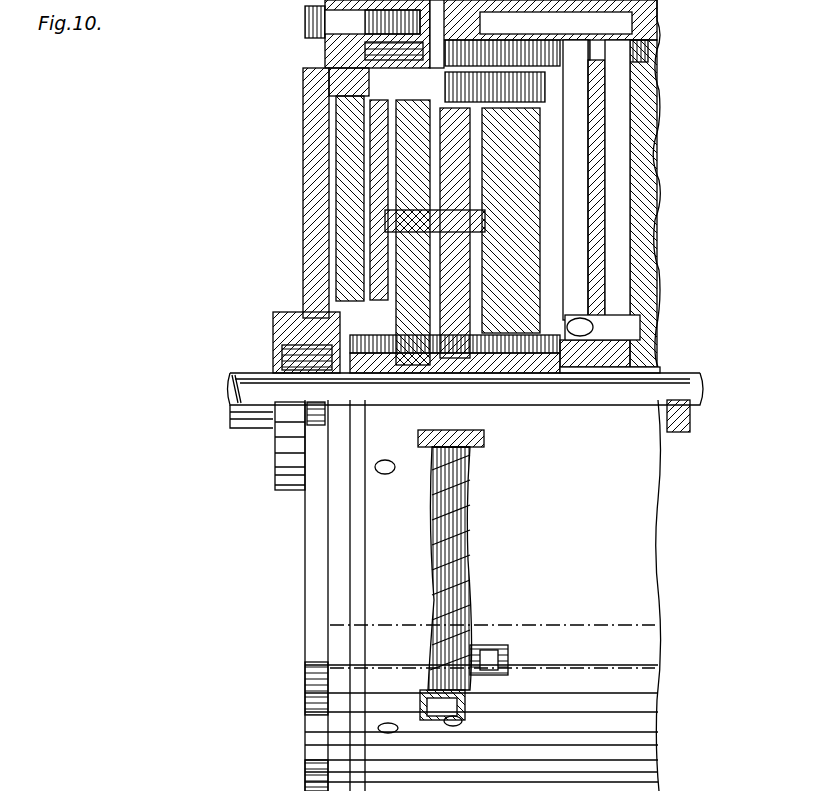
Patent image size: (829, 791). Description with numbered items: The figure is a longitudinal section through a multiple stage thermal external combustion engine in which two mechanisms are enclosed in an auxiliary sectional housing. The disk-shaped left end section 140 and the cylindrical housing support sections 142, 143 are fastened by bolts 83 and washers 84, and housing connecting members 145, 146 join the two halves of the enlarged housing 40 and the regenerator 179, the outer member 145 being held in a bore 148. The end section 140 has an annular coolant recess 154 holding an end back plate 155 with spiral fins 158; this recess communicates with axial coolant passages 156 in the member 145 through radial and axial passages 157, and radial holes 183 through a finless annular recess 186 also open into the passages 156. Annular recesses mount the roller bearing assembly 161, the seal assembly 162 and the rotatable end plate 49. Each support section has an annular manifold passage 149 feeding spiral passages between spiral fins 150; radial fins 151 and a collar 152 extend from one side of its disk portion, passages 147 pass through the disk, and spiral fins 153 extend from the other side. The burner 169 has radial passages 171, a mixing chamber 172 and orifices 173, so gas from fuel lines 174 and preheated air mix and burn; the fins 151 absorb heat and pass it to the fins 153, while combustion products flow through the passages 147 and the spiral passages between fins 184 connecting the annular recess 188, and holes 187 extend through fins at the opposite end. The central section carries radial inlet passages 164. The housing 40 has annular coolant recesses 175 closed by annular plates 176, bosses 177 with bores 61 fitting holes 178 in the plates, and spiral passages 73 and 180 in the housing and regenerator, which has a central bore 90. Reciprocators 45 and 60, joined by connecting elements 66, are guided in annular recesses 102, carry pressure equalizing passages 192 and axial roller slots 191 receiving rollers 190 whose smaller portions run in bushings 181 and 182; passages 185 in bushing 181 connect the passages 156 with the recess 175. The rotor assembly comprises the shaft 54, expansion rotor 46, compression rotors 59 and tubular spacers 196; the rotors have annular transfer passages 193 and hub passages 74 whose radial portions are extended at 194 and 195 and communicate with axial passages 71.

The left housing support section 142 is at (310, 4).
The annular manifold passage 149 is at (330, 50).
The axial coolant passages 156 is at (370, 75).
The outer housing connecting member 145 is at (385, 80).
The radial and axial passages 157 is at (303, 88).
The radial holes 183 is at (330, 100).
The rotatable annular end plate 49 is at (370, 110).
The finless annular recess 186 is at (375, 125).
The cylindrical bushing 181 is at (302, 120).
The housing 40 is at (355, 135).
The axial and radial passages 185 is at (375, 145).
The axial roller slots 191 is at (375, 160).
The rollers 190 is at (365, 180).
The extended radial passage portion 194 is at (370, 195).
The annular coolant recess 154 is at (330, 208).
The extended radial passage portion 195 is at (345, 225).
The annular end back plate 155 is at (340, 237).
The connecting elements 66 is at (360, 250).
The pressure equalizing passages 192 is at (340, 265).
The annular transfer passages 193 is at (340, 278).
The spiral fins 158 is at (330, 290).
The seal assembly 162 is at (320, 340).
The roller bearing assembly 161 is at (278, 350).
The spiral fins 150 is at (658, 45).
The fuel lines 174 is at (658, 55).
The right housing support section 143 is at (655, 65).
The bore 148 is at (655, 78).
The passages 147 is at (655, 95).
The axial passages 71 is at (655, 118).
The radial passages 171 is at (615, 140).
The radial fins 151 is at (655, 150).
The reciprocator 45 is at (660, 165).
The spiral fins 153 is at (655, 215).
The orifices 173 is at (655, 300).
The mixing chamber 172 is at (625, 325).
The burner 169 is at (640, 340).
The rotor hub passages 74 is at (658, 355).
The collar 152 is at (640, 370).
The compression rotor 59 is at (322, 365).
The reciprocator 60 is at (385, 365).
The annular recesses 102 is at (432, 360).
The bosses 177 is at (410, 370).
The annular coolant recesses 175 is at (440, 365).
The annular plate 176 is at (455, 360).
The rotor 46 is at (595, 355).
The tubular spacers 196 is at (540, 370).
The inner housing connecting member 146 is at (515, 380).
The central bore 90 is at (475, 440).
The spiral flow passages 73 is at (470, 470).
The rotor shaft 54 is at (257, 428).
The radial inlet passages 164 is at (392, 472).
The left end section 140 is at (305, 568).
The regenerator 179 is at (470, 545).
The holes 187 is at (508, 668).
The cylindrical bushing 182 is at (500, 678).
The spiral passages 180 is at (440, 675).
The spiral fins 184 is at (465, 710).
The annular recess 188 is at (460, 725).
The bolts 83 is at (305, 760).
The washers 84 is at (305, 782).
The holes 178 is at (488, 180).
The bores 61 is at (495, 240).